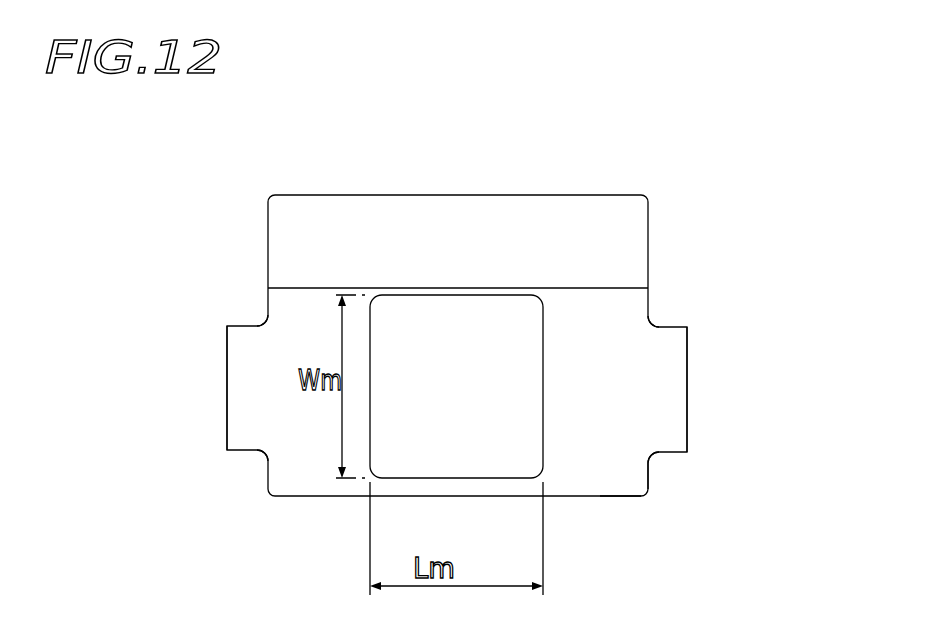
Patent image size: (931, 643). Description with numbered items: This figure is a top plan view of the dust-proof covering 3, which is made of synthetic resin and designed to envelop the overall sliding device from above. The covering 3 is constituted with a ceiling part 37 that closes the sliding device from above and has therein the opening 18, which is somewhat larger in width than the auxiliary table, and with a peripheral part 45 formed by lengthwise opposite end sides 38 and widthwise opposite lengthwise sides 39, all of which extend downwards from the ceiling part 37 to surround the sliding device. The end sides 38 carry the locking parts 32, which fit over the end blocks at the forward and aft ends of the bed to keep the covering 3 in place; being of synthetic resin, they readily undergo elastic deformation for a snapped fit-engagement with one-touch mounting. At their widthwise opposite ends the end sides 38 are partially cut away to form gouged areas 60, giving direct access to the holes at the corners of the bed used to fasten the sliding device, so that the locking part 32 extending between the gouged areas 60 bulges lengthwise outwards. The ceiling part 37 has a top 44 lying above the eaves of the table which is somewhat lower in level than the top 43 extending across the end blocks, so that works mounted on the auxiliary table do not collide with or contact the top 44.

The covering 3 is at (568, 280).
The top of the ceiling part 44 is at (397, 227).
The opening 18 is at (477, 460).
The ceiling part 37 is at (608, 330).
The locking part 32 is at (242, 323).
The gouged area 60 is at (263, 320).
The end side 38 is at (687, 422).
The lengthwise side 39 is at (595, 498).
The peripheral part 45 is at (657, 573).
The top of the ceiling part 43 is at (330, 455).